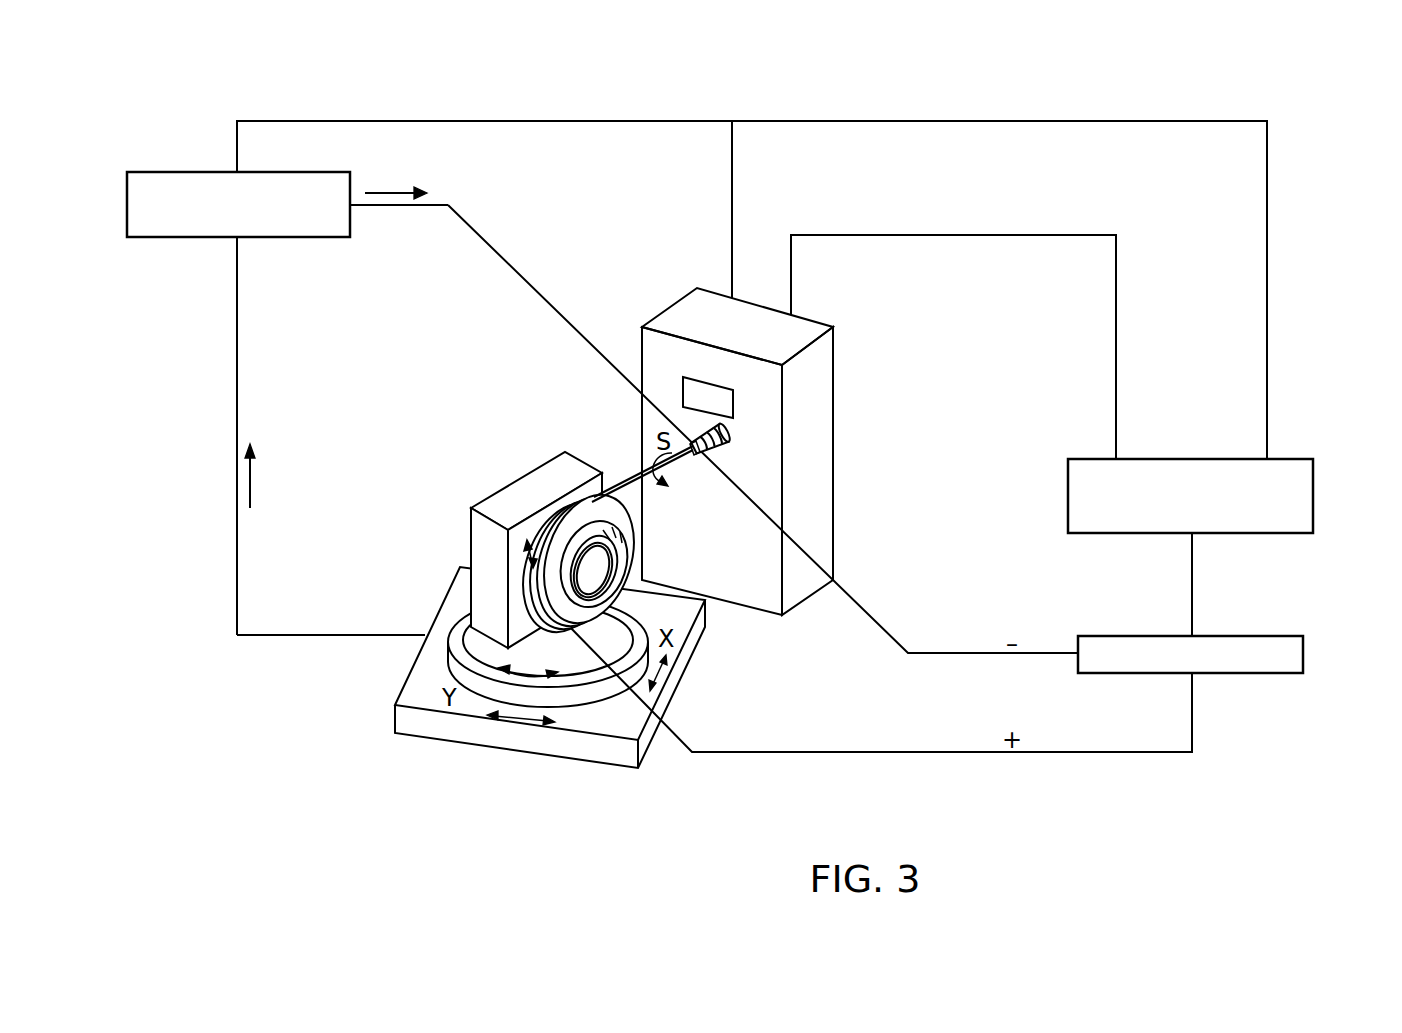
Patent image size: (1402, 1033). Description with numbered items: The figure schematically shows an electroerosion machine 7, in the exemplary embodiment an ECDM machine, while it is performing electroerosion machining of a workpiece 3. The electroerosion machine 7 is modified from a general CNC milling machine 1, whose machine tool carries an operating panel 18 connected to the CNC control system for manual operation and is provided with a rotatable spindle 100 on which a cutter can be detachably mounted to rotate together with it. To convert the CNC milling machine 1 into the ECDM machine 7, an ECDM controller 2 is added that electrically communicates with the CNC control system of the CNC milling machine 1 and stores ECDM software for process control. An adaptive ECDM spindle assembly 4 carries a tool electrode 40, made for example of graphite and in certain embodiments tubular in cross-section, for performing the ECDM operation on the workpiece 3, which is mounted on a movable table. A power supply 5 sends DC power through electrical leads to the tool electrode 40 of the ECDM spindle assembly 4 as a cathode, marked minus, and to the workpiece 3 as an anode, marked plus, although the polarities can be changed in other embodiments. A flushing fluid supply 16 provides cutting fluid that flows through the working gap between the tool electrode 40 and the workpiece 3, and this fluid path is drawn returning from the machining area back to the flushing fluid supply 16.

The electroerosion machine 7 is at (1272, 60).
The flushing fluid supply 16 is at (190, 172).
The CNC machine 1 is at (683, 303).
The operating panel 18 is at (733, 396).
The rotatable spindle 100 is at (728, 437).
The adaptive ECDM spindle assembly 4 is at (698, 453).
The tool electrode 40 is at (626, 483).
The workpiece 3 is at (642, 566).
The ECDM controller 2 is at (1314, 492).
The power supply 5 is at (1304, 652).